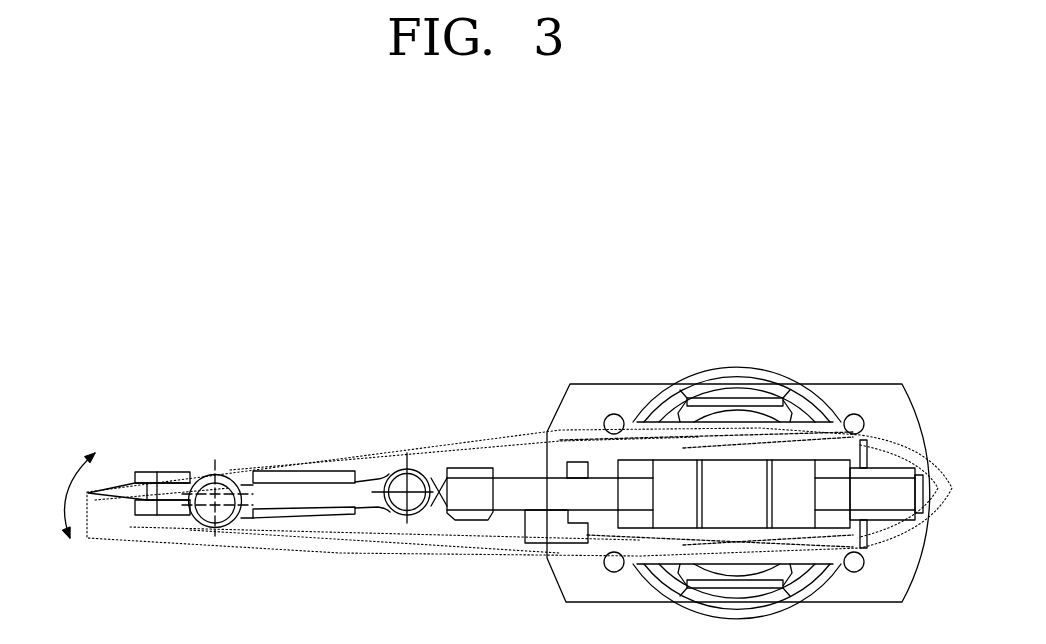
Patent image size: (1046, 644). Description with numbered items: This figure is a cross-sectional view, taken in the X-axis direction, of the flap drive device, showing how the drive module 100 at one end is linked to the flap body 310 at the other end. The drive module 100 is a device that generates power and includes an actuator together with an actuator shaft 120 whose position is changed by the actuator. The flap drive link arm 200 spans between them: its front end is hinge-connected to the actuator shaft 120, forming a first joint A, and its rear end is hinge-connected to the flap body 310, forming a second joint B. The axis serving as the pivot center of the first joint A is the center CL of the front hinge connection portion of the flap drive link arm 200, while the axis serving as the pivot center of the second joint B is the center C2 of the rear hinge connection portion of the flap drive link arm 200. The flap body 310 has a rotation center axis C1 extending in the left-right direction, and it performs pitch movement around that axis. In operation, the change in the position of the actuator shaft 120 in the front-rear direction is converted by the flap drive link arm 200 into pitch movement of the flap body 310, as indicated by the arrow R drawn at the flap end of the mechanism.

The drive module 100 is at (750, 440).
The actuator shaft 120 is at (532, 495).
The flap drive link arm 200 is at (322, 517).
The flap body 310 is at (118, 502).
The first joint A is at (416, 462).
The second joint B is at (225, 535).
The rotation center axis C1 is at (220, 495).
The center of the rear hinge connection portion C2 is at (213, 505).
The center of the front hinge connection portion CL is at (407, 490).
The arrow indicating pitch movement R is at (69, 495).